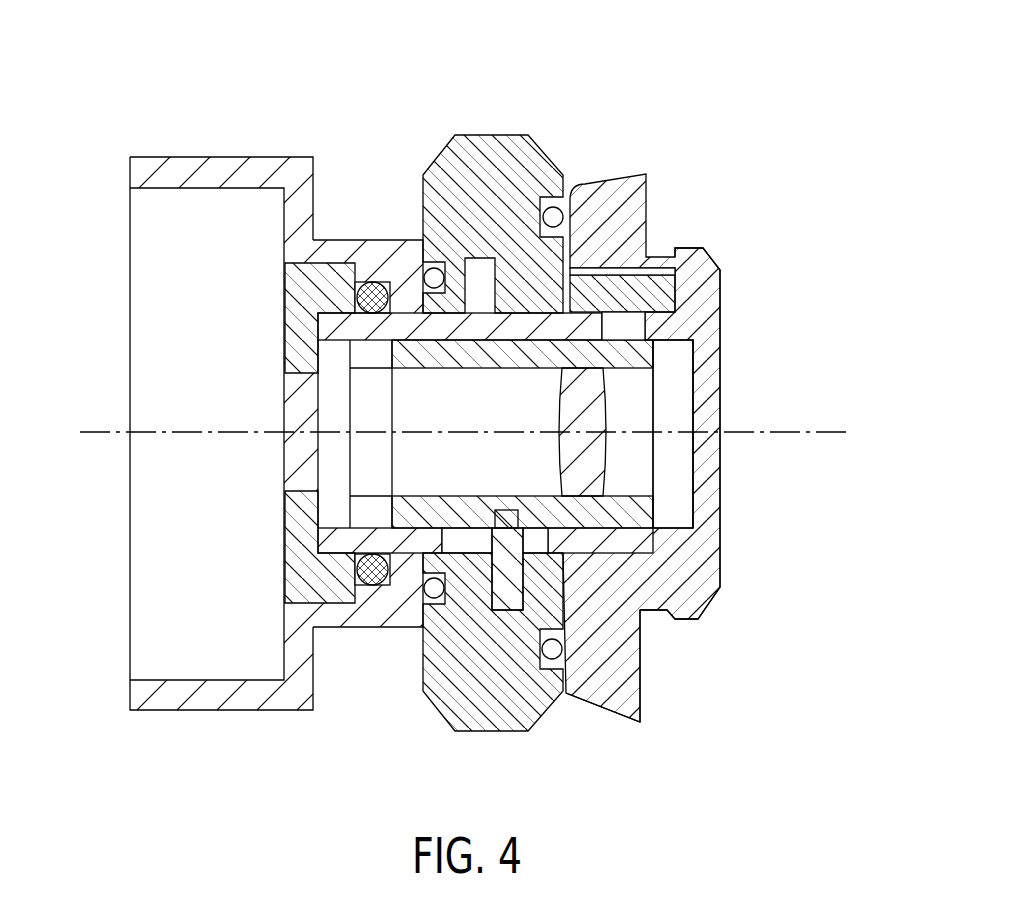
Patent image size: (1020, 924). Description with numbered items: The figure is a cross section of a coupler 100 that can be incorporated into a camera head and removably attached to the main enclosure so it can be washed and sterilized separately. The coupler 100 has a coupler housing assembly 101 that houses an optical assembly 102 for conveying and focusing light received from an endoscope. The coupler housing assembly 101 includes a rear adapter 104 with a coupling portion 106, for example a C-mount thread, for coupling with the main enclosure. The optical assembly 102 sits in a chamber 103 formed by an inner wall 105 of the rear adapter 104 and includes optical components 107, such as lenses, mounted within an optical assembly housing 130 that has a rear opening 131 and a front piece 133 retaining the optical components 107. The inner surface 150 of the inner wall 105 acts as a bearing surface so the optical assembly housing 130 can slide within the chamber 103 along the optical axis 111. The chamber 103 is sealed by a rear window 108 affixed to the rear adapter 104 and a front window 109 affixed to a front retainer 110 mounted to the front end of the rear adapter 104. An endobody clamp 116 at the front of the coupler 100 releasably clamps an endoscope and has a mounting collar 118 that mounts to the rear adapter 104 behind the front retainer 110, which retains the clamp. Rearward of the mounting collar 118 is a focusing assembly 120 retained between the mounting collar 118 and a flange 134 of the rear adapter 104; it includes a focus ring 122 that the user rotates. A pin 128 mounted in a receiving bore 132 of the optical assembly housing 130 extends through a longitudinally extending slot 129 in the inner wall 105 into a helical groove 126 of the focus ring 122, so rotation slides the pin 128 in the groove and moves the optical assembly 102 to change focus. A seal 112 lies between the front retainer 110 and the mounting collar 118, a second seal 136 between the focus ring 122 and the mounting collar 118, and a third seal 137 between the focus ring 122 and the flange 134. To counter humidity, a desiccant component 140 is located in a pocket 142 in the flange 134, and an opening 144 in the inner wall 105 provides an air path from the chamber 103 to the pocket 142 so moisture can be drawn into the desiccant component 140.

The coupler 100 is at (749, 76).
The coupler housing assembly 101 is at (678, 168).
The optical assembly 102 is at (677, 352).
The chamber 103 is at (333, 408).
The rear adapter 104 is at (707, 547).
The inner wall 105 is at (537, 328).
The coupling portion 106 is at (717, 262).
The optical components 107 is at (603, 400).
The rear window 108 is at (707, 483).
The front window 109 is at (297, 455).
The front retainer 110 is at (297, 358).
The optical axis 111 is at (820, 428).
The seal 112 is at (372, 580).
The endobody clamp 116 is at (312, 156).
The mounting collar 118 is at (343, 241).
The focusing assembly 120 is at (525, 99).
The focus ring 122 is at (467, 147).
The helical groove 126 is at (512, 612).
The pin 128 is at (530, 572).
The slot 129 is at (475, 540).
The optical assembly housing 130 is at (350, 522).
The rear opening 131 is at (653, 422).
The receiving bore 132 is at (518, 518).
The front piece 133 is at (353, 503).
The flange 134 is at (630, 670).
The second seal 136 is at (436, 605).
The third seal 137 is at (570, 692).
The desiccant component 140 is at (652, 285).
The pocket 142 is at (632, 270).
The opening 144 is at (628, 325).
The inner surface 150 is at (333, 338).